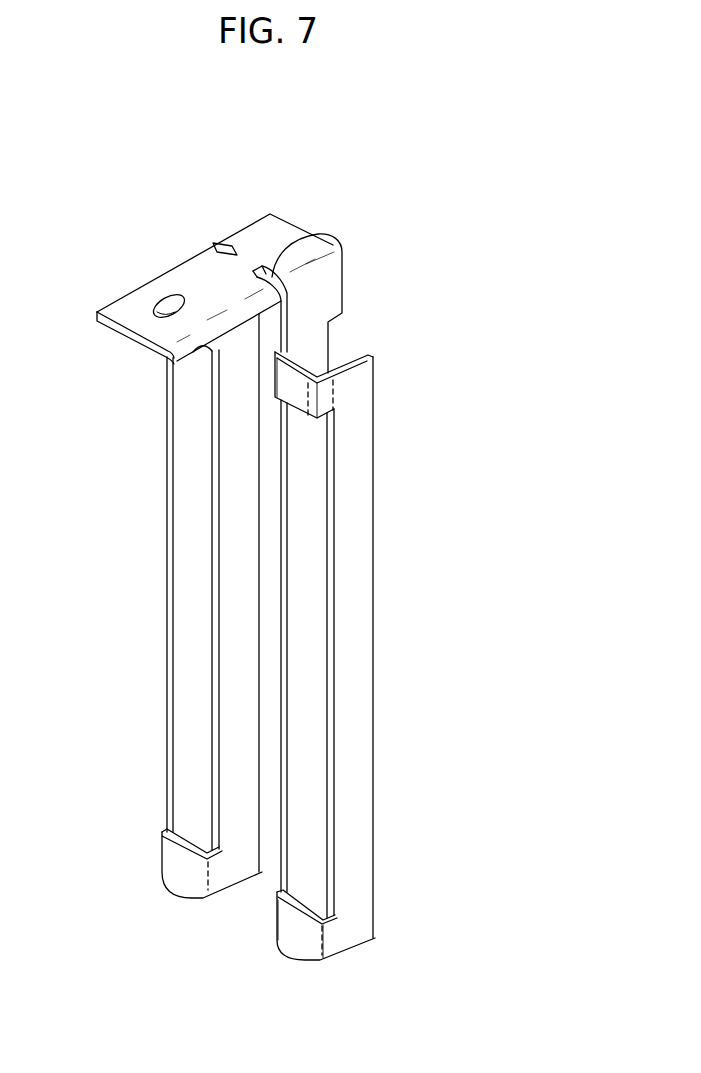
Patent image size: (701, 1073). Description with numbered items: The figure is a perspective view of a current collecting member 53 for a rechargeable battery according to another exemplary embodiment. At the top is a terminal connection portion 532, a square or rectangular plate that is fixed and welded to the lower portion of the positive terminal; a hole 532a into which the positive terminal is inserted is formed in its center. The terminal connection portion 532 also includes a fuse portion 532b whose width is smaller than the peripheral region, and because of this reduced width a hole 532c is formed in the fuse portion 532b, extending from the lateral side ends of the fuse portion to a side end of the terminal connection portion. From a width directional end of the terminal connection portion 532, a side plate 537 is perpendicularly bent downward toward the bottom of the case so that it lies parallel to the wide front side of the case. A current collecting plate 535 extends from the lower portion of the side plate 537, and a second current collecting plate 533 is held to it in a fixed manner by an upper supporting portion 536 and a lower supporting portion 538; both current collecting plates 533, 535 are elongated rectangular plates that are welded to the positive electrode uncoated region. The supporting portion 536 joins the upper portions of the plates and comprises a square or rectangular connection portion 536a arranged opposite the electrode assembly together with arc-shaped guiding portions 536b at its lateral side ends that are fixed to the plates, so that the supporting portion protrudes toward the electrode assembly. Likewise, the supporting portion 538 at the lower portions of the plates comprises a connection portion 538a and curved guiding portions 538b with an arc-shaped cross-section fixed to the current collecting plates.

The current collecting member 53 is at (309, 218).
The terminal connection portion 532 is at (197, 270).
The hole 532a is at (160, 303).
The fuse portion 532b is at (243, 262).
The hole 532c is at (307, 229).
The side plate 537 is at (320, 303).
The supporting portion 536 is at (278, 383).
The connection portion 536a is at (300, 402).
The guiding portion 536b is at (323, 402).
The current collecting plate 533 is at (357, 728).
The current collecting plate 535 is at (307, 657).
The supporting portion 538 is at (288, 928).
The connection portion 538a is at (298, 940).
The guiding portion 538b is at (323, 938).